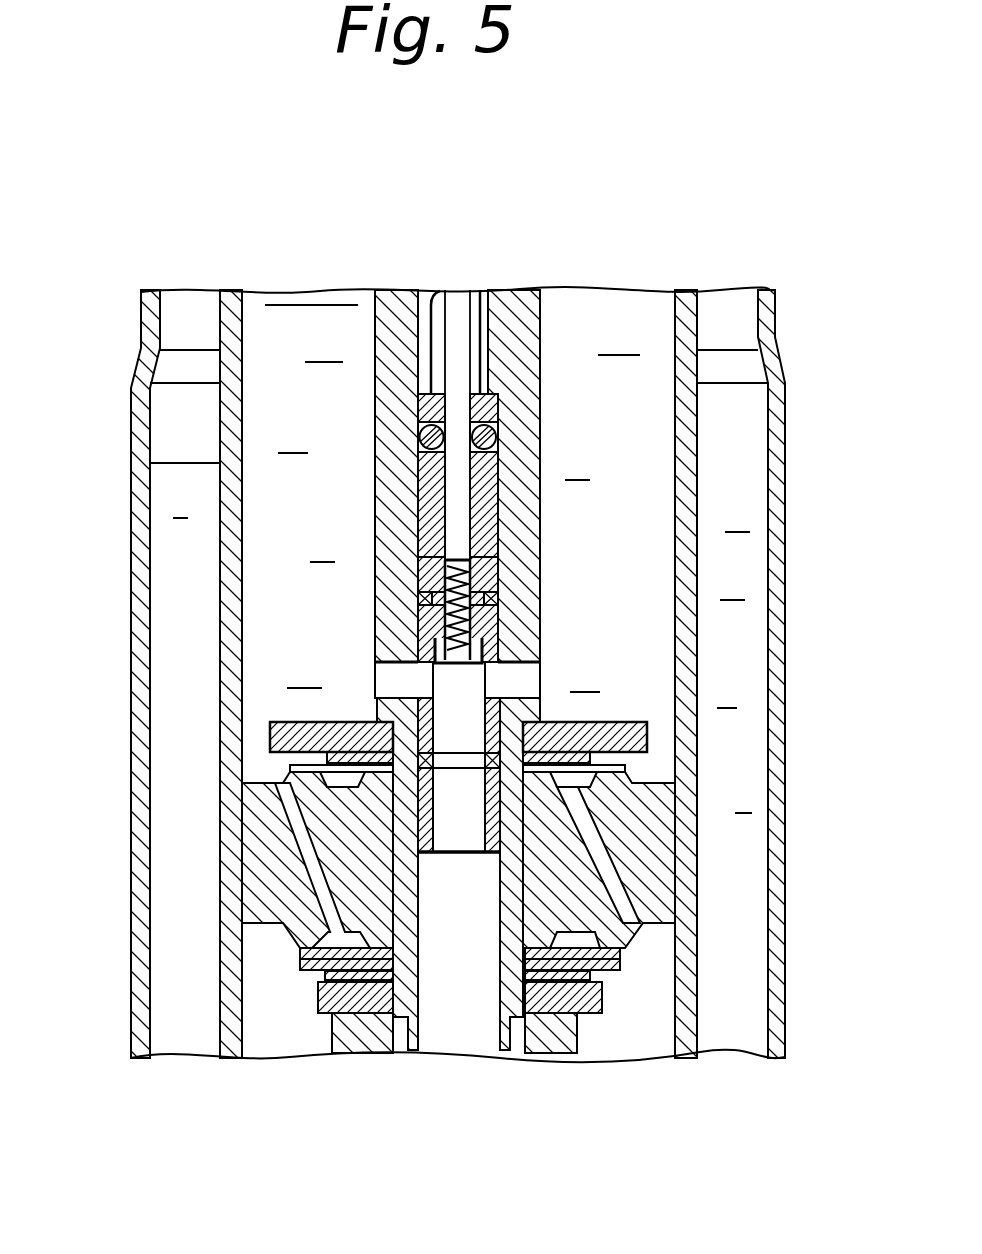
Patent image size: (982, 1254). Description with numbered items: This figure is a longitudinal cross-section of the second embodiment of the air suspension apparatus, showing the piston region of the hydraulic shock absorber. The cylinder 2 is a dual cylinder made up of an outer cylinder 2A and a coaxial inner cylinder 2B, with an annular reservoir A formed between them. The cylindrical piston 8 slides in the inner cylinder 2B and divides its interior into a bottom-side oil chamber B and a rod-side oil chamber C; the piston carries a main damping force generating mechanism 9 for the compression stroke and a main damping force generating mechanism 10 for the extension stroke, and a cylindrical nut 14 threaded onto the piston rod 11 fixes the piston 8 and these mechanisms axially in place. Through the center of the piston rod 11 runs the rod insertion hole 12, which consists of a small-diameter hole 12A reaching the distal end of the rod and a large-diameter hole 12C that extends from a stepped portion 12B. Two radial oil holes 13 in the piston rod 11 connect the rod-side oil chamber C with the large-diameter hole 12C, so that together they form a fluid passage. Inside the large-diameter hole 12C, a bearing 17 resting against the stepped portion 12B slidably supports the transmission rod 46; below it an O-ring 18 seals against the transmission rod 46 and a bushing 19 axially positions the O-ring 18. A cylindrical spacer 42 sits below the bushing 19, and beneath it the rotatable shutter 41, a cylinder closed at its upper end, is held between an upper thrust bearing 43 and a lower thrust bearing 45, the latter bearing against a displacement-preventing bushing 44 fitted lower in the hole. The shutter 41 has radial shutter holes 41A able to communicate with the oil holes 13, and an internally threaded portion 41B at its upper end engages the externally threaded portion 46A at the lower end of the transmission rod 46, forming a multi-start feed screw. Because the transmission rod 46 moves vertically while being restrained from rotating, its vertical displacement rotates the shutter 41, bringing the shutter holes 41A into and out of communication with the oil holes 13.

The cylinder 2 is at (782, 335).
The outer cylinder 2A is at (150, 346).
The inner cylinder 2B is at (685, 408).
The piston 8 is at (657, 848).
The main damping force generating mechanism for the compression stroke 9 is at (662, 735).
The main damping force generating mechanism for the extension stroke 10 is at (311, 995).
The piston rod 11 is at (400, 300).
The rod insertion hole 12 is at (480, 300).
The small-diameter hole 12A is at (444, 298).
The stepped portion 12B is at (466, 462).
The large-diameter hole 12C is at (430, 526).
The oil hole 13 is at (385, 696).
The nut 14 is at (372, 1040).
The bearing 17 is at (425, 392).
The O-ring 18 is at (425, 436).
The bushing 19 is at (492, 500).
The shutter 41 is at (388, 678).
The shutter hole 41A is at (492, 681).
The internally threaded portion 41B is at (495, 600).
The spacer 42 is at (478, 565).
The upper thrust bearing 43 is at (425, 598).
The bushing for preventing displacement 44 is at (400, 822).
The lower thrust bearing 45 is at (400, 753).
The transmission rod 46 is at (464, 472).
The externally threaded portion 46A is at (430, 620).
The annular reservoir A is at (745, 1000).
The bottom-side oil chamber B is at (615, 1040).
The rod-side oil chamber C is at (262, 484).